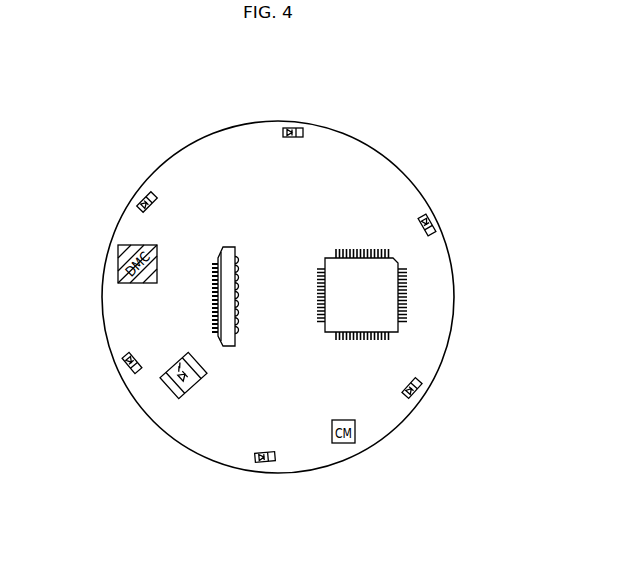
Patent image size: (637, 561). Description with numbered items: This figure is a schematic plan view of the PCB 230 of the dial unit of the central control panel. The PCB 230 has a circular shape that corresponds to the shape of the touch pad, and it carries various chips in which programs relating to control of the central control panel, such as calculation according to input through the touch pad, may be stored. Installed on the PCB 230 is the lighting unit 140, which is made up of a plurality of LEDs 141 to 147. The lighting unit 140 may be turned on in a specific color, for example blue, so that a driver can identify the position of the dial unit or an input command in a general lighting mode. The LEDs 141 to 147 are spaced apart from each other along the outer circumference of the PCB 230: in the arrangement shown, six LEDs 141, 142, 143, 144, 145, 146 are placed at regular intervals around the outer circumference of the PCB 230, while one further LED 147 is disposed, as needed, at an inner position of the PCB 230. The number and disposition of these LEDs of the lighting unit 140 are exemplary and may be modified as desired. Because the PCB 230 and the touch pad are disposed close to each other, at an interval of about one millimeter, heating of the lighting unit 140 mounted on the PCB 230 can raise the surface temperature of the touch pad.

The PCB 230 is at (160, 99).
The lighting unit 140 is at (268, 302).
The LED 141 is at (128, 366).
The LED 142 is at (141, 198).
The LED 143 is at (293, 126).
The LED 144 is at (427, 218).
The LED 145 is at (418, 392).
The LED 146 is at (261, 465).
The LED 147 is at (164, 378).